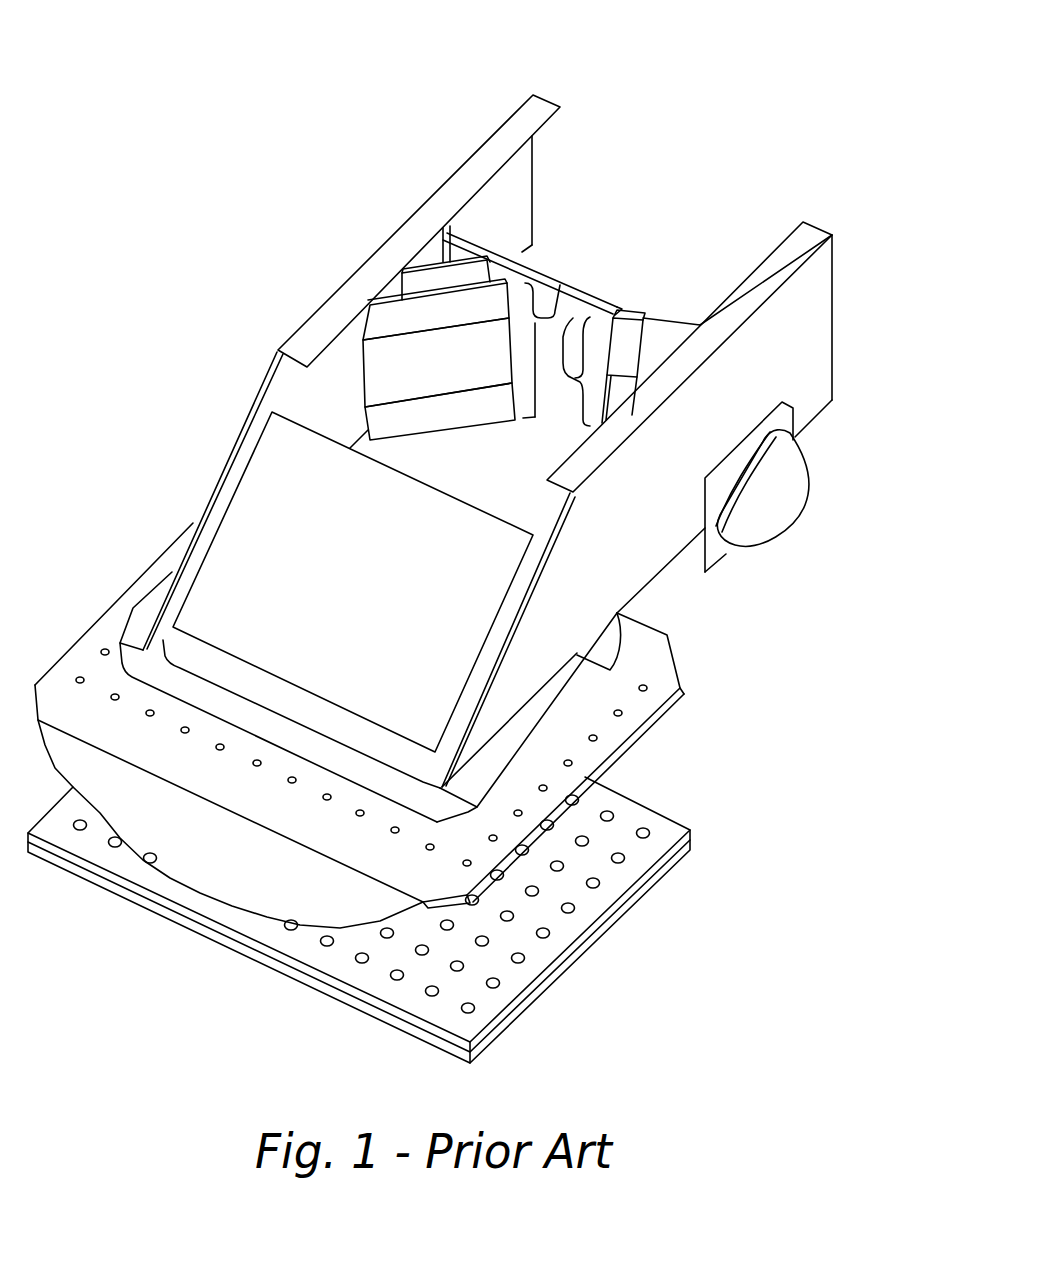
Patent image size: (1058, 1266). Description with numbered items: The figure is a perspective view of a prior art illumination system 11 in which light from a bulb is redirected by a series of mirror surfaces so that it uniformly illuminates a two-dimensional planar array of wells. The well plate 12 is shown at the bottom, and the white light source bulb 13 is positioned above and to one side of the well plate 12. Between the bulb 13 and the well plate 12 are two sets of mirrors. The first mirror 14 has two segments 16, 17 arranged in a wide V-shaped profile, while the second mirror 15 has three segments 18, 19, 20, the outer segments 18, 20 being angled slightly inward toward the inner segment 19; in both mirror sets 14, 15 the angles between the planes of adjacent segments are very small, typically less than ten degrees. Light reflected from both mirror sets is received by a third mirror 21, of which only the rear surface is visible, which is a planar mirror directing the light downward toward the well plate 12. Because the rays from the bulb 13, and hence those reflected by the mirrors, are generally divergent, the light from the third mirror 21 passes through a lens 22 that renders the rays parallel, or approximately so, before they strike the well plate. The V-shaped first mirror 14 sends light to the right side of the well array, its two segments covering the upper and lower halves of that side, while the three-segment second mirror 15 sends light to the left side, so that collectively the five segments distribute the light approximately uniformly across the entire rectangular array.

The illumination system 11 is at (368, 124).
The well plate 12 is at (603, 930).
The white light source bulb 13 is at (813, 477).
The first mirror 14 is at (586, 318).
The second mirror 15 is at (555, 315).
The segment of first mirror 16 is at (627, 348).
The segment of first mirror 17 is at (617, 387).
The outer segment of second mirror 18 is at (388, 323).
The inner segment of second mirror 19 is at (383, 373).
The outer segment of second mirror 20 is at (397, 422).
The third mirror 21 is at (483, 650).
The lens 22 is at (640, 727).